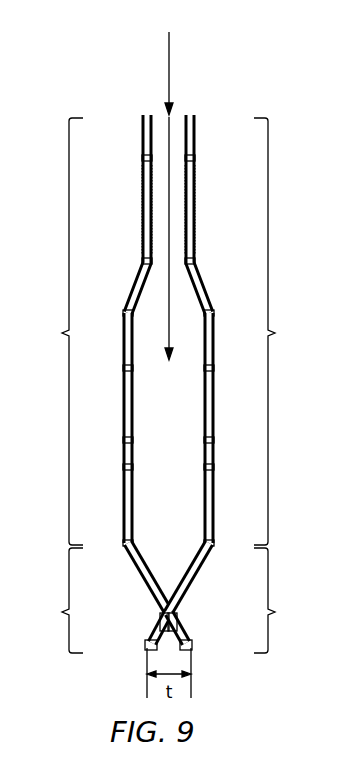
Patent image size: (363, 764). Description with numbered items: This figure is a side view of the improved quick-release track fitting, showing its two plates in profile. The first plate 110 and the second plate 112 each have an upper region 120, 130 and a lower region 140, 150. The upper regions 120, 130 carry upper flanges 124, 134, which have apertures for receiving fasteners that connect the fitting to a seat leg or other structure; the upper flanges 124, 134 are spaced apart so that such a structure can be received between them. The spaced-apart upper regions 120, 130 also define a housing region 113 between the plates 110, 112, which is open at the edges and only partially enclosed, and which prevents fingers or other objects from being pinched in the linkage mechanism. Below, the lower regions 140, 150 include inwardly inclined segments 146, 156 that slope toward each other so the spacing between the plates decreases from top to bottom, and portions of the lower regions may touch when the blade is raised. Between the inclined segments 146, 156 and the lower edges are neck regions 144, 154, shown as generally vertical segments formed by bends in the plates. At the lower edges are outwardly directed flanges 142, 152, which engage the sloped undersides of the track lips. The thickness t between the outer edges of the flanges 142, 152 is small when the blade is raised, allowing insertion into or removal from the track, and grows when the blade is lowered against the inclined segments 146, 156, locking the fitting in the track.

The first plate 110 is at (143, 117).
The second plate 112 is at (193, 117).
The housing region 113 is at (169, 185).
The upper region 120 is at (75, 332).
The upper flange 124 is at (146, 207).
The upper region 130 is at (263, 332).
The upper flange 134 is at (192, 207).
The lower region 140 is at (49, 600).
The outwardly directed flange 142 is at (149, 653).
The neck region 144 is at (162, 627).
The inwardly inclined segment 146 is at (140, 583).
The lower region 150 is at (287, 600).
The outwardly directed flange 152 is at (189, 653).
The neck region 154 is at (176, 627).
The inwardly inclined segment 156 is at (198, 583).